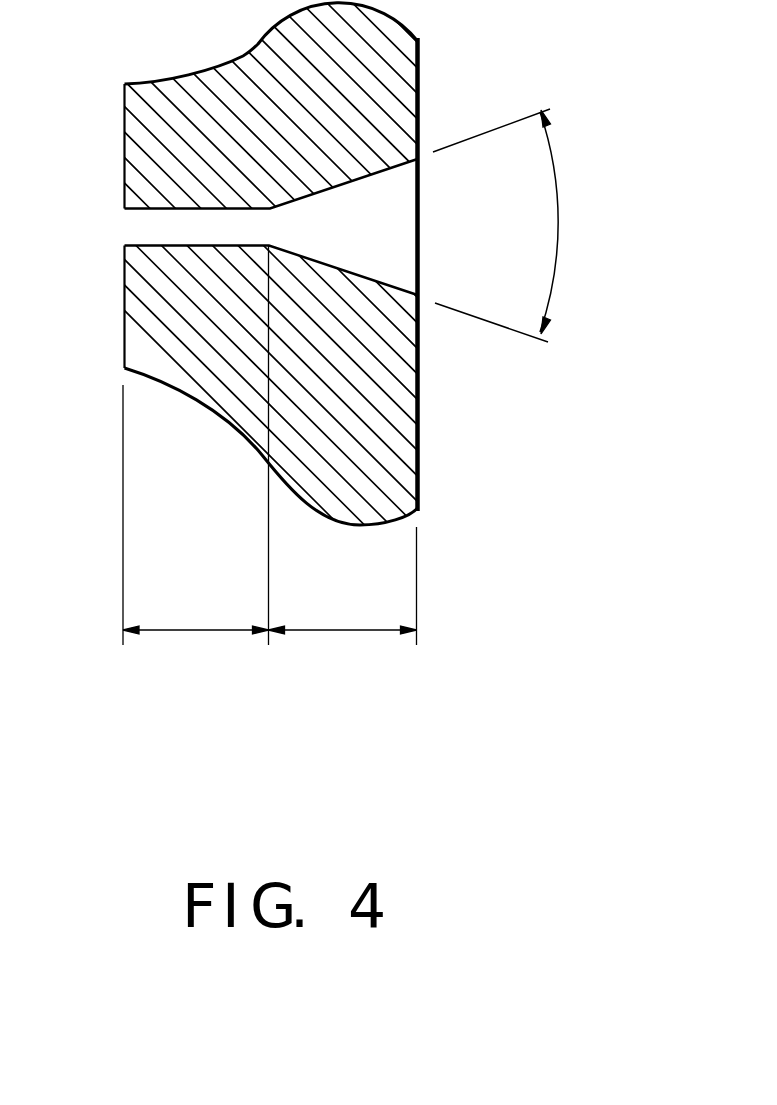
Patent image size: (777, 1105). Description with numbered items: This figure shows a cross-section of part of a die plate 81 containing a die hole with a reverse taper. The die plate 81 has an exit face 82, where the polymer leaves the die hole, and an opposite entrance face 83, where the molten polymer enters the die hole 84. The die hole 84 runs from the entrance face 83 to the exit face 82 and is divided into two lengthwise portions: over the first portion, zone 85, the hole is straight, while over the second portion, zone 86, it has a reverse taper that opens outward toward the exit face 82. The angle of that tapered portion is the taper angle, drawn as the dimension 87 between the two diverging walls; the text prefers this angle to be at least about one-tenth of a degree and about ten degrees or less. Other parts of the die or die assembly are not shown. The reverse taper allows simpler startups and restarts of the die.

The die plate 81 is at (207, 90).
The exit face 82 is at (420, 72).
The entrance face 83 is at (123, 133).
The die hole 84 is at (126, 236).
The straight zone 85 is at (190, 632).
The reverse taper zone 86 is at (343, 628).
The taper angle 87 is at (560, 210).